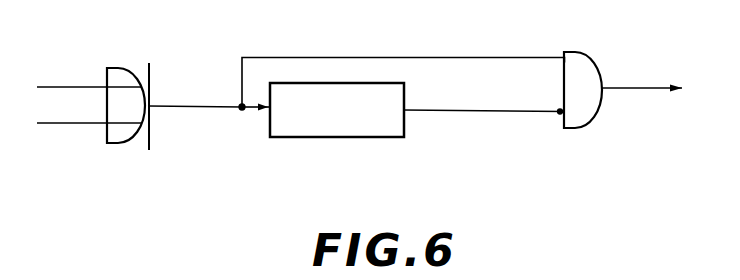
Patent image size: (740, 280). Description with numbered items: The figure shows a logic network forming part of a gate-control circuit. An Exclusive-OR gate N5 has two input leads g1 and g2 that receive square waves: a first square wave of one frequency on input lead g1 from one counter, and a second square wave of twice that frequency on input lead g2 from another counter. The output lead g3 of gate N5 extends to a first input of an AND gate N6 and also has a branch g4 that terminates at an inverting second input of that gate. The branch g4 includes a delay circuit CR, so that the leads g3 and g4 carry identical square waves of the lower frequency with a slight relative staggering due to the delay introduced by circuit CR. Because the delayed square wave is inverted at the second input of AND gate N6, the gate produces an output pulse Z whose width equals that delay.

The input lead g1 is at (58, 86).
The input lead g2 is at (72, 123).
The output lead g3 is at (195, 107).
The branch g4 is at (483, 112).
The Exclusive-OR gate N5 is at (147, 45).
The AND gate N6 is at (590, 57).
The delay circuit CR is at (357, 137).
The pulse Z is at (653, 67).